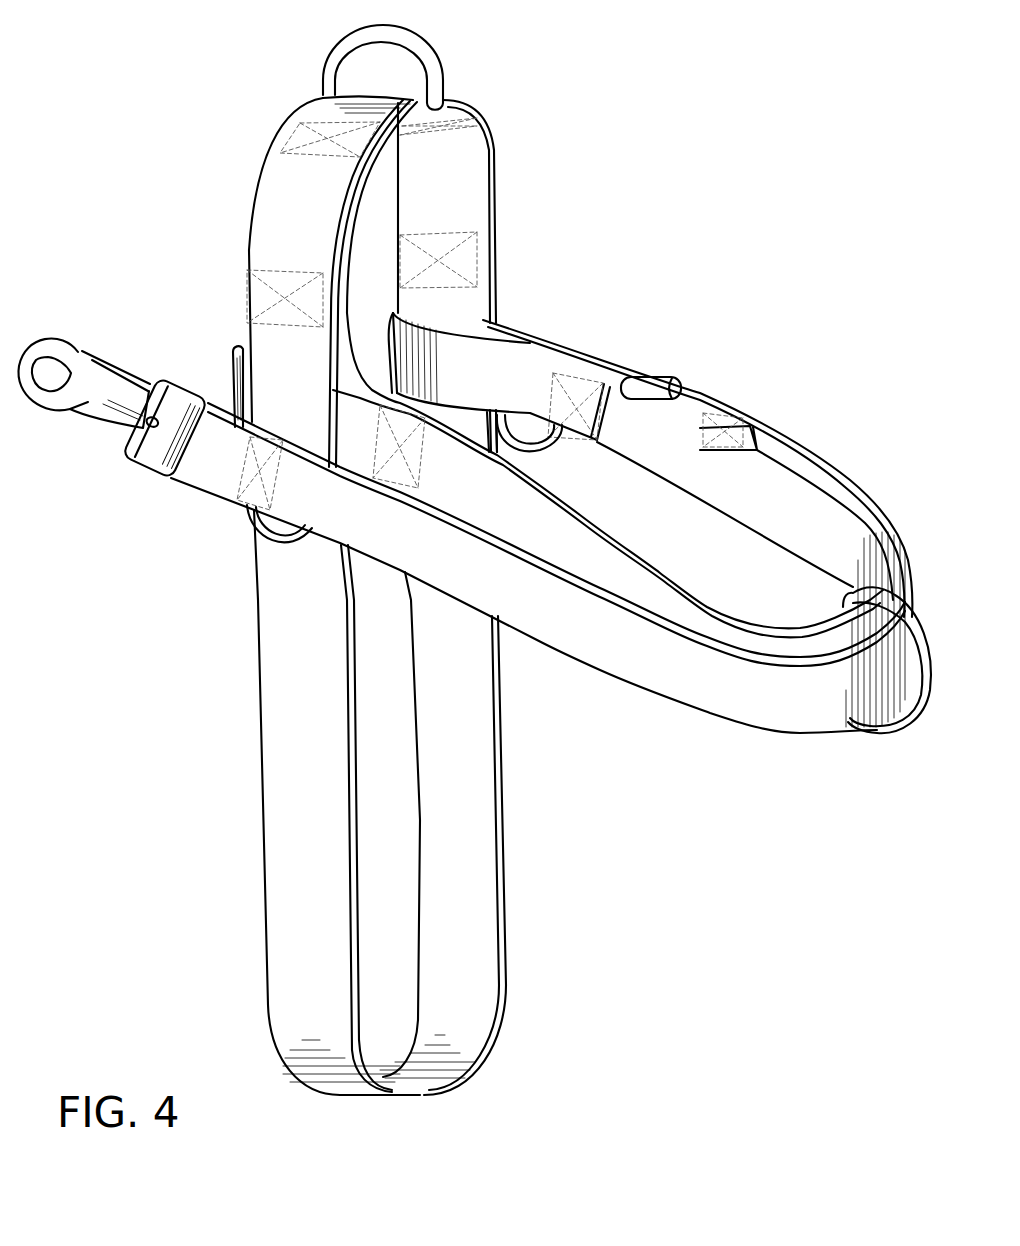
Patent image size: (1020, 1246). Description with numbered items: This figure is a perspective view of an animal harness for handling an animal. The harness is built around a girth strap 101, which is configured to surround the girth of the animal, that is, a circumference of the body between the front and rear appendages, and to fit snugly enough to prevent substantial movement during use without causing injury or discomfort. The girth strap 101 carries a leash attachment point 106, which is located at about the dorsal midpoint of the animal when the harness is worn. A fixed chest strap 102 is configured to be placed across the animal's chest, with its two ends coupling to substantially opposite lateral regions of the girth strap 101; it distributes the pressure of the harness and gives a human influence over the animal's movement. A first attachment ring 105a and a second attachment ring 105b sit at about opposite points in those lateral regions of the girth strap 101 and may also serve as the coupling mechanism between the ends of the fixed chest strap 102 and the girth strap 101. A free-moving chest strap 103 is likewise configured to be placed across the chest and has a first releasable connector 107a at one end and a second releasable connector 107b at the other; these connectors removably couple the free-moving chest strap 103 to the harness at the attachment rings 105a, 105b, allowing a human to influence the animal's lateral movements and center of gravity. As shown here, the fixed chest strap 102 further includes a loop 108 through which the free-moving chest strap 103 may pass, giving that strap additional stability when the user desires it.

The girth strap 101 is at (295, 948).
The fixed chest strap 102 is at (643, 595).
The free-moving chest strap 103 is at (747, 707).
The first attachment ring 105a is at (257, 528).
The second attachment ring 105b is at (503, 410).
The leash attachment point 106 is at (340, 63).
The first releasable connector 107a is at (55, 351).
The second releasable connector 107b is at (543, 443).
The loop 108 is at (903, 730).